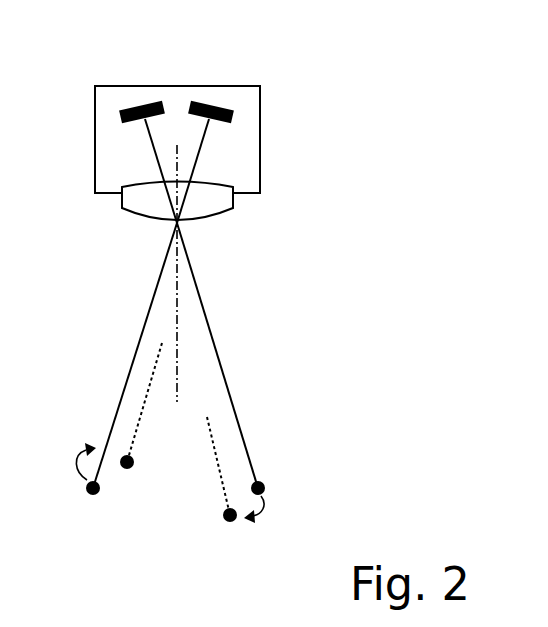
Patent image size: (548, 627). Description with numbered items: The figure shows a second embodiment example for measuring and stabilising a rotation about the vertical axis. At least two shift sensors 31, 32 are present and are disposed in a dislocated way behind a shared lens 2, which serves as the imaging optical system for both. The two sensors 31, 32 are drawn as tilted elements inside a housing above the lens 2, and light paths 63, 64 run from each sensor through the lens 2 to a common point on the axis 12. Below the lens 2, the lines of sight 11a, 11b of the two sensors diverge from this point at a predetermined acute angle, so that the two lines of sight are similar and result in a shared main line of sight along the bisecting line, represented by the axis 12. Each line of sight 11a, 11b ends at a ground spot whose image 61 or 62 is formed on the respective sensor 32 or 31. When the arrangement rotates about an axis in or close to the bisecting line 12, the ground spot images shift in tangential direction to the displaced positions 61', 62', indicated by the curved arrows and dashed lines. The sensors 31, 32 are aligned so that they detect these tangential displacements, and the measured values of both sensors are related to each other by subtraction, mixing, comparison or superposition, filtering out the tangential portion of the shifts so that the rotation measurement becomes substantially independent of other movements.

The lens 2 is at (138, 220).
The optical axis 12 is at (178, 300).
The shift sensor 31 is at (222, 105).
The shift sensor 32 is at (133, 105).
The light beam from first light source 63 is at (214, 120).
The light beam from second light source 64 is at (140, 120).
The first light beam after lens 11a is at (130, 372).
The second light beam after lens 11b is at (218, 356).
The ground spot image 61 is at (70, 502).
The shifted first light spot 61' is at (141, 443).
The ground spot image 62 is at (284, 480).
The shifted second light spot 62' is at (212, 509).